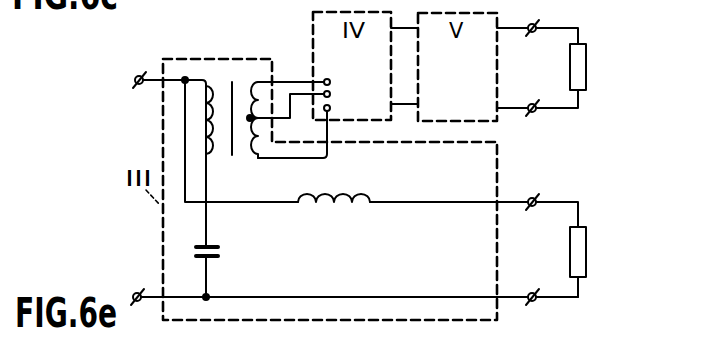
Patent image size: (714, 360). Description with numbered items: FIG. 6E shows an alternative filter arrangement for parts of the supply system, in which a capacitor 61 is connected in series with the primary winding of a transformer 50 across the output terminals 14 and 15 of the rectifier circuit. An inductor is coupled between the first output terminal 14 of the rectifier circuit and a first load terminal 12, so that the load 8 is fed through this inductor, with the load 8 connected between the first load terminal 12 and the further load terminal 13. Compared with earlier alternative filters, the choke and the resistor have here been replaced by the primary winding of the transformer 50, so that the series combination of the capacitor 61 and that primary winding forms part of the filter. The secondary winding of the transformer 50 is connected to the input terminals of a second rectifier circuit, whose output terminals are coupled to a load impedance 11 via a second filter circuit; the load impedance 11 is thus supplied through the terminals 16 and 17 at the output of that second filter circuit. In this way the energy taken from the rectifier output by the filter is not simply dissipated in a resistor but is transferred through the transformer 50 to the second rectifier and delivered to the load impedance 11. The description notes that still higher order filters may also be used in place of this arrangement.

The load 8 is at (588, 250).
The load impedance 11 is at (587, 71).
The first load terminal 12 is at (539, 194).
The output terminal 13 is at (535, 289).
The first output terminal 14 is at (139, 84).
The output terminal 15 is at (138, 291).
The output terminal 16 is at (536, 112).
The output terminal 17 is at (540, 24).
The transformer 50 is at (221, 87).
The capacitor 61 is at (212, 263).